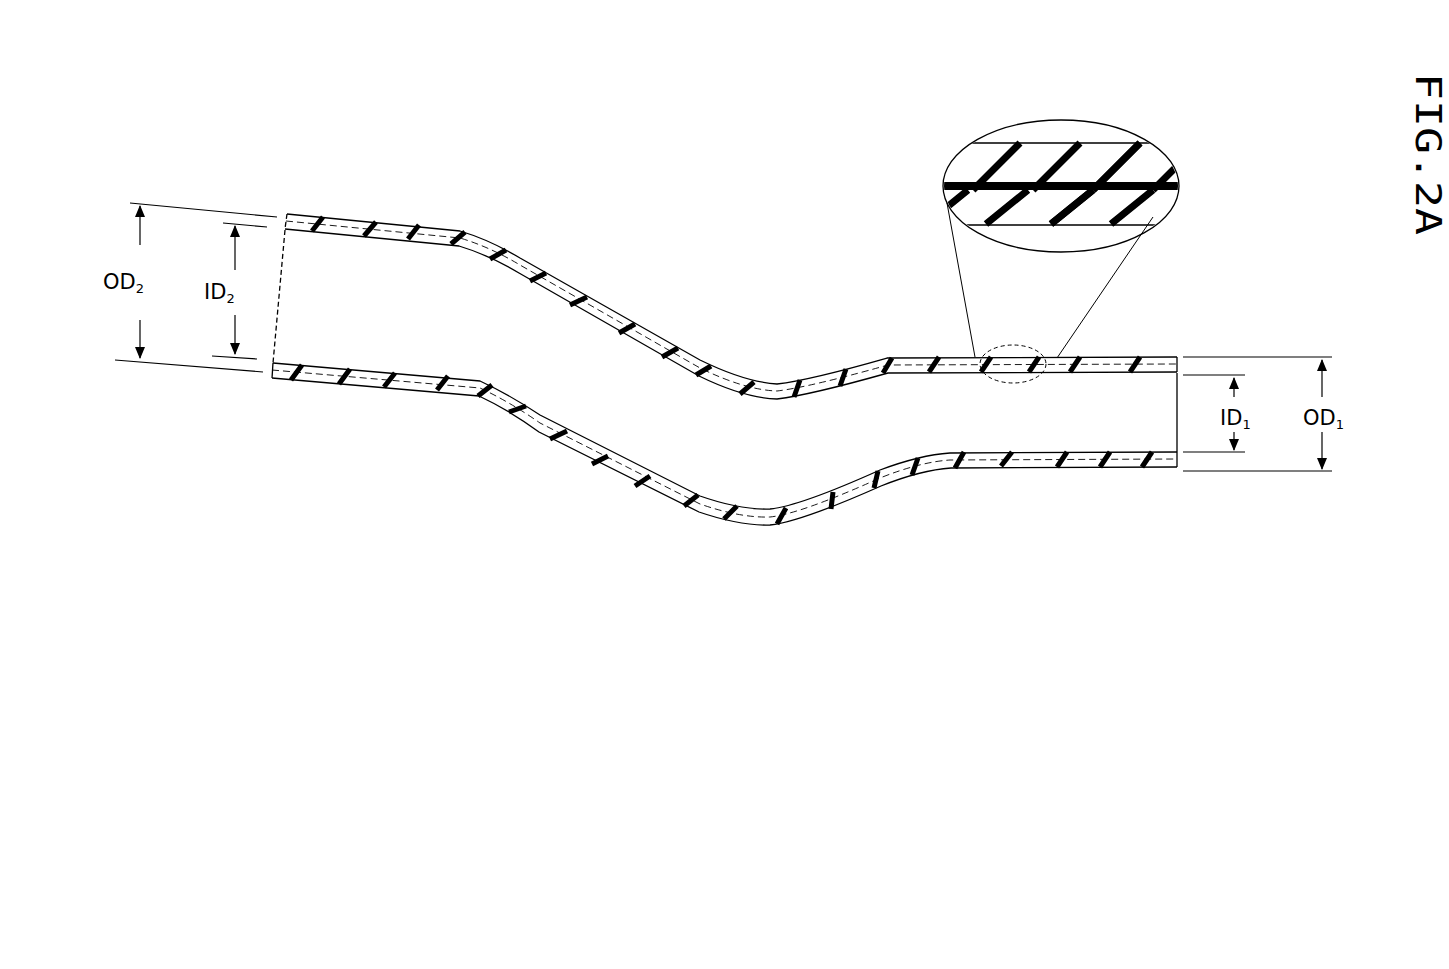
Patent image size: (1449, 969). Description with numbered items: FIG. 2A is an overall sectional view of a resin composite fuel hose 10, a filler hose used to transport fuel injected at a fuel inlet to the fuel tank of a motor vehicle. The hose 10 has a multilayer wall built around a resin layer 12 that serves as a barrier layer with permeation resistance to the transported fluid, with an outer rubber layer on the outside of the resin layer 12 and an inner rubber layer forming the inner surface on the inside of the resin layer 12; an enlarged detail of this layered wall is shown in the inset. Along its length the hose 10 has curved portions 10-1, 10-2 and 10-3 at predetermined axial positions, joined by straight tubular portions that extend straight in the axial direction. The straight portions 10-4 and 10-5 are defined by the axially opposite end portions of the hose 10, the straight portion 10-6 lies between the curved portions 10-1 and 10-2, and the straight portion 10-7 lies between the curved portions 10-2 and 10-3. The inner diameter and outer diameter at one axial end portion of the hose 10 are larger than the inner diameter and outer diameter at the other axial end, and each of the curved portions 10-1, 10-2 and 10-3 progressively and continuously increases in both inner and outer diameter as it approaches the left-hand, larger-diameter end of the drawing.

The fuel hose 10 is at (737, 284).
The curved portion 10-1 is at (904, 355).
The curved portion 10-2 is at (758, 518).
The curved portion 10-3 is at (467, 231).
The straight portion 10-4 is at (1098, 478).
The straight portion 10-5 is at (292, 380).
The straight portion 10-6 is at (851, 504).
The straight portion 10-7 is at (584, 462).
The resin layer 12 is at (1023, 184).